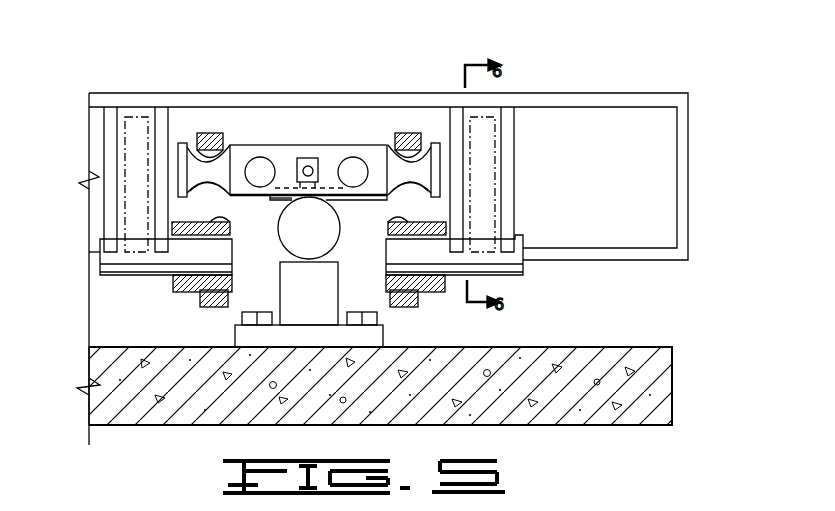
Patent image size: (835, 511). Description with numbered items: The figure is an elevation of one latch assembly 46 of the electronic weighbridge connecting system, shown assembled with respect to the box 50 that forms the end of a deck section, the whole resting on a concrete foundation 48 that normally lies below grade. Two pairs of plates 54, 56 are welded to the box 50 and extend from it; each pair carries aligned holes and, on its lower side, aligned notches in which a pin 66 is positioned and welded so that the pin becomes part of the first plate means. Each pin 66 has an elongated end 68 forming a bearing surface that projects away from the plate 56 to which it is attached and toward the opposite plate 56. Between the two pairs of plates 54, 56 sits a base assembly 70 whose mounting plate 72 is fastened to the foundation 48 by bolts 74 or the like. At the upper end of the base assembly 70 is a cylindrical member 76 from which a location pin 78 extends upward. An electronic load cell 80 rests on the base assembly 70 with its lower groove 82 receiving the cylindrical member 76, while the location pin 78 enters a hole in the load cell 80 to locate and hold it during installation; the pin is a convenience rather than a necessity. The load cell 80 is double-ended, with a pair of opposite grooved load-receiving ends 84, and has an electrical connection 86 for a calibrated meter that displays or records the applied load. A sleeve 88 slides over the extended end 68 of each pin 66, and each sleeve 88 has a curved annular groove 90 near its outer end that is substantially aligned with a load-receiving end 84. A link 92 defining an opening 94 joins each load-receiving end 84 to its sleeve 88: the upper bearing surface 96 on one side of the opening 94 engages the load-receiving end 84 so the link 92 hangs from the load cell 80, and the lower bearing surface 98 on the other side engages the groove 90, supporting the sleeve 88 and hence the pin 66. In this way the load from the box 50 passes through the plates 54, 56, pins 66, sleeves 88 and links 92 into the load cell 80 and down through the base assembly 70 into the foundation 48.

The latch assembly 46 is at (313, 112).
The foundation 48 is at (650, 386).
The box 50 is at (653, 102).
The plate 54 is at (108, 118).
The plate 56 is at (163, 120).
The pin 66 is at (100, 262).
The elongated end 68 is at (185, 274).
The base assembly 70 is at (306, 360).
The mounting plate 72 is at (328, 337).
The anchor bolt 74 is at (240, 320).
The cylindrical member 76 is at (300, 238).
The location pin 78 is at (270, 205).
The load cell 80 is at (328, 150).
The lower groove 82 is at (342, 158).
The load-receiving end 84 is at (395, 148).
The electrical connection 86 is at (307, 158).
The sleeve 88 is at (200, 248).
The groove 90 is at (205, 222).
The link 92 is at (215, 131).
The opening 94 is at (227, 160).
The upper bearing surface 96 is at (200, 156).
The lower bearing surface 98 is at (227, 260).